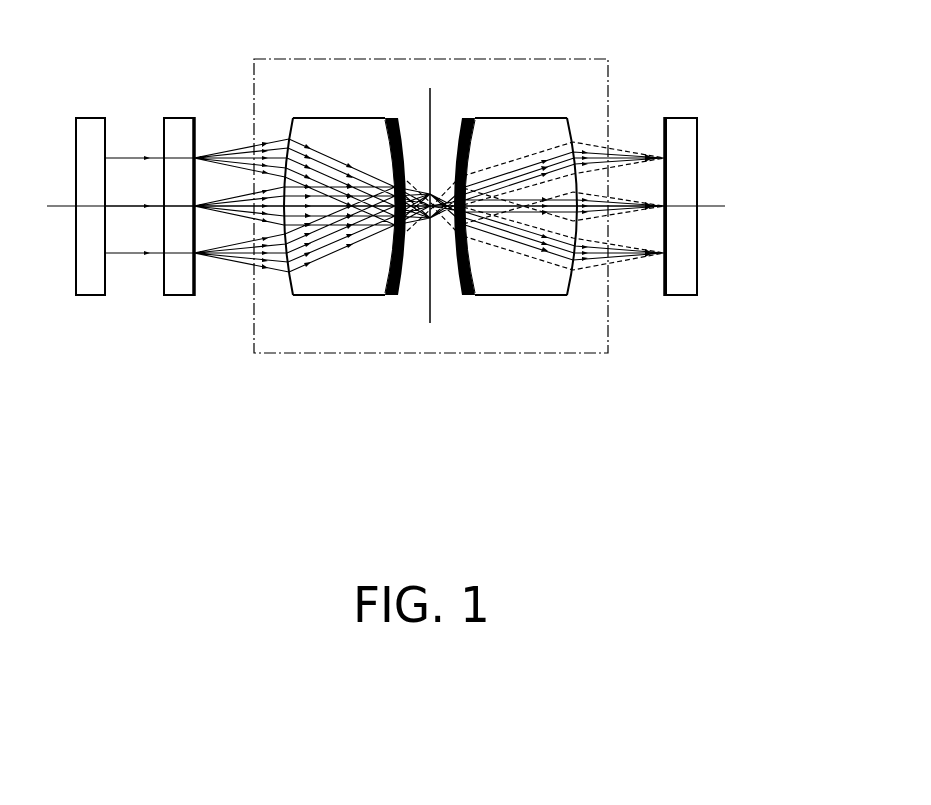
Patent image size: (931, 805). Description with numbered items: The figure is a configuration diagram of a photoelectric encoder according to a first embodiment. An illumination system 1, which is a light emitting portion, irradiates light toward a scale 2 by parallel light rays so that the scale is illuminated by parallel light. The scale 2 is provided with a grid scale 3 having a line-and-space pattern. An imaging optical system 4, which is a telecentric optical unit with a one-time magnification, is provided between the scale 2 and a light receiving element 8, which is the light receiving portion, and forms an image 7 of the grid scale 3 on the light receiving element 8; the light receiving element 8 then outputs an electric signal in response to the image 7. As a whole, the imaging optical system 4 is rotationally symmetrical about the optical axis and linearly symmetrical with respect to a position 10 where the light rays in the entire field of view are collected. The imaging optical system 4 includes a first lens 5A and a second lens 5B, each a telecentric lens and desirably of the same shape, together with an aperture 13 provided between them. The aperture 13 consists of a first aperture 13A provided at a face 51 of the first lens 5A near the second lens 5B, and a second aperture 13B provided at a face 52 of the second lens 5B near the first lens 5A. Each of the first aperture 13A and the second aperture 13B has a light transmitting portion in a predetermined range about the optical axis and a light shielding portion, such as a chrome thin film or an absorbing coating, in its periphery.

The illumination system 1 is at (76, 118).
The scale 2 is at (164, 118).
The grid scale 3 is at (197, 128).
The imaging optical system 4 is at (281, 58).
The first lens 5A is at (360, 127).
The second lens 5B is at (505, 127).
The image 7 is at (664, 130).
The light receiving element 8 is at (697, 118).
The position where light rays in the entire field of view are collected 10 is at (430, 328).
The aperture 13 is at (493, 415).
The first aperture 13A is at (399, 264).
The second aperture 13B is at (461, 264).
The face near the second lens in the first lens 51 is at (389, 283).
The face near the first lens in the second lens 52 is at (471, 283).